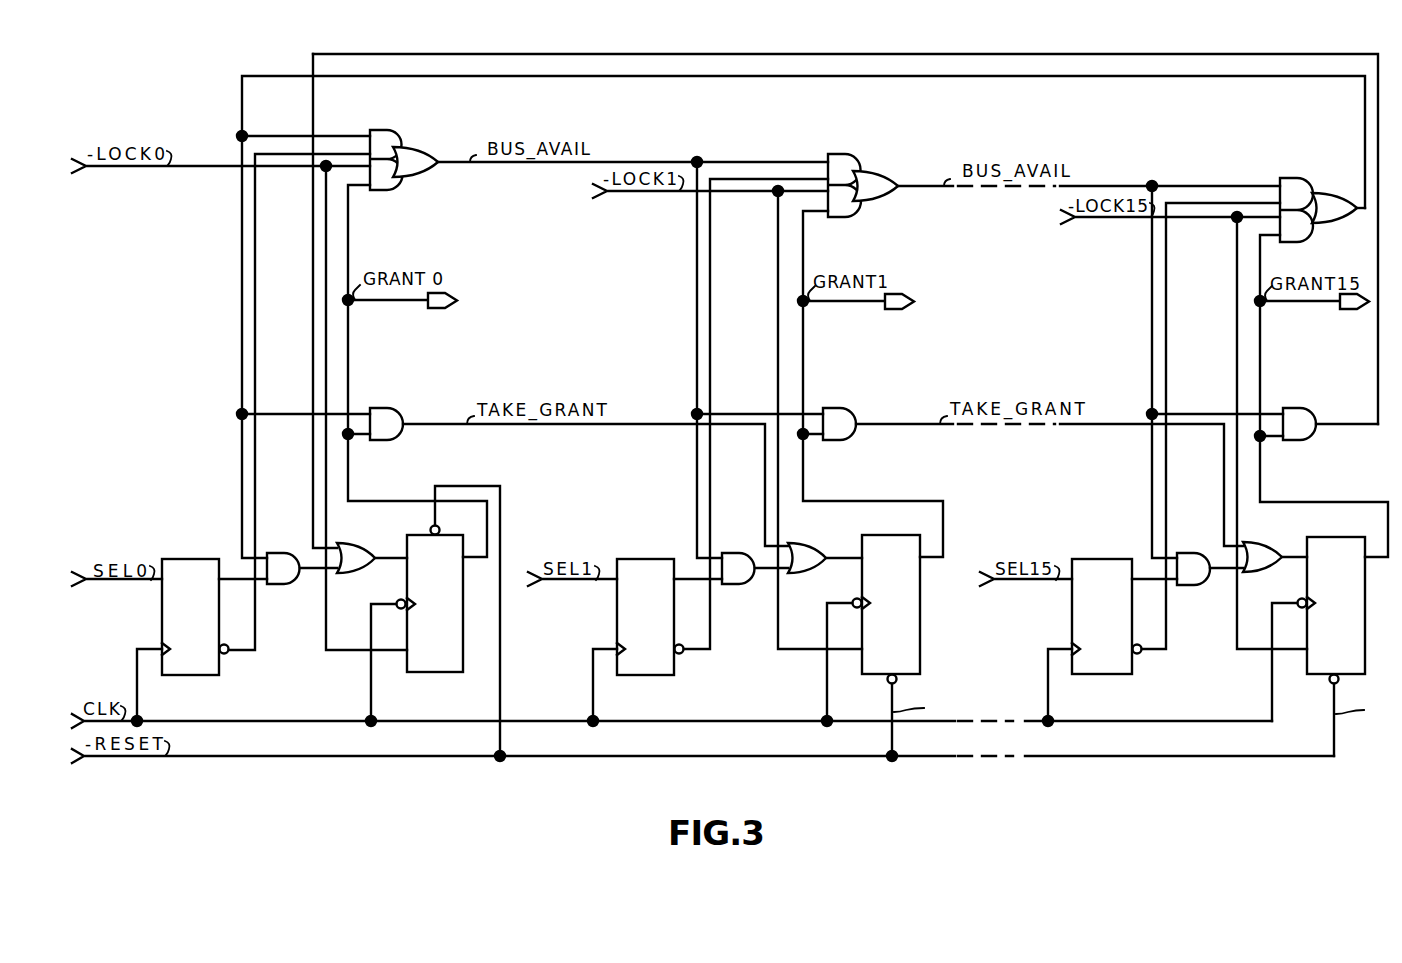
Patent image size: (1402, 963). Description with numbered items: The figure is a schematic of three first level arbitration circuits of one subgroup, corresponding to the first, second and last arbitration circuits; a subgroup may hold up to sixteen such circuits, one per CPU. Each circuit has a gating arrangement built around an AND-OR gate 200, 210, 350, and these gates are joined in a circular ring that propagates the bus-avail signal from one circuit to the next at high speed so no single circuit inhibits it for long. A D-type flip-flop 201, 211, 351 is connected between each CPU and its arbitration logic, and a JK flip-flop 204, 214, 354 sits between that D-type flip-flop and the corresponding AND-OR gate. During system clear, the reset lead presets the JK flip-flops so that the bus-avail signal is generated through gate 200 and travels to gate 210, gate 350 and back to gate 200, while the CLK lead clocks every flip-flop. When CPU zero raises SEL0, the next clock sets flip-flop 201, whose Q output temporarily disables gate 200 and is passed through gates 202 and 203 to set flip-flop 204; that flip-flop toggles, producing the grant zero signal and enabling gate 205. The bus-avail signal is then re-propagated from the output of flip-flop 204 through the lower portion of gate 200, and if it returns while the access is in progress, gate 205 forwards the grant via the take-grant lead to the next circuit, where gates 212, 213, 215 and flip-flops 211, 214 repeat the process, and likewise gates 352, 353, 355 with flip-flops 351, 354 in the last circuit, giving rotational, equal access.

The AND-OR gate 200 is at (450, 131).
The D-type flip-flop 201 is at (178, 558).
The gate 202 is at (272, 585).
The gate 203 is at (347, 544).
The JK flip-flop 204 is at (433, 675).
The gate 205 is at (384, 407).
The AND-OR gate 210 is at (919, 161).
The D-type flip-flop 211 is at (630, 558).
The gate 212 is at (726, 585).
The gate 213 is at (798, 543).
The JK flip-flop 214 is at (921, 652).
The gate 215 is at (836, 407).
The AND-OR gate 350 is at (1364, 185).
The D-type flip-flop 351 is at (1094, 543).
The gate 352 is at (1183, 586).
The gate 353 is at (1253, 542).
The JK flip-flop 354 is at (1328, 537).
The gate 355 is at (1297, 407).